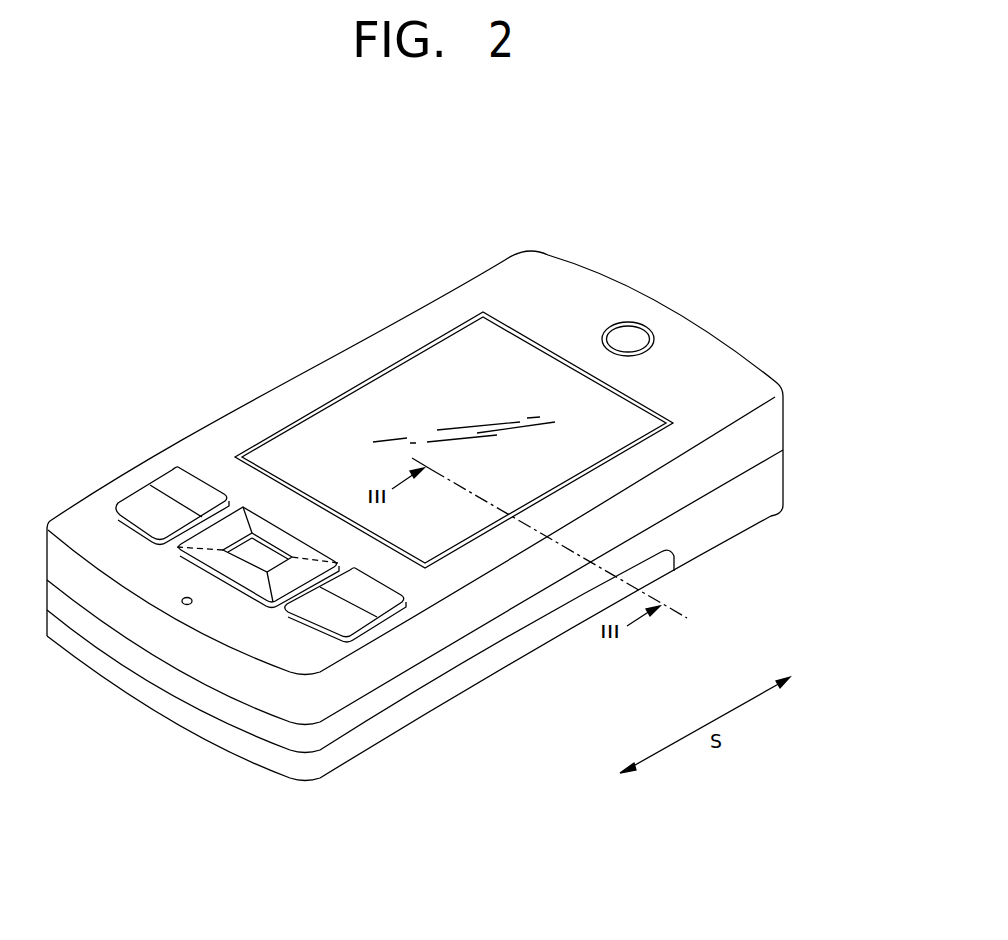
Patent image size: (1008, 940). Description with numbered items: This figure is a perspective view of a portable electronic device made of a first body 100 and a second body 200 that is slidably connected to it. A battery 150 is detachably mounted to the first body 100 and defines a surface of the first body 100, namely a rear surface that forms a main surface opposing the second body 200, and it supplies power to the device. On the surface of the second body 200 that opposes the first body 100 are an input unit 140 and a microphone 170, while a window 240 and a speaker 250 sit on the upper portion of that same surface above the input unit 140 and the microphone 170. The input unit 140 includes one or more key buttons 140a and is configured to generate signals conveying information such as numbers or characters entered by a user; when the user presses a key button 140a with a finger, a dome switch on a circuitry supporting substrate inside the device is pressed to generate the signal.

The first body 100 is at (663, 543).
The input unit 140 is at (314, 636).
The key button 140a is at (328, 618).
The battery 150 is at (465, 678).
The microphone 170 is at (186, 605).
The second body 200 is at (645, 508).
The window 240 is at (620, 433).
The speaker 250 is at (636, 336).